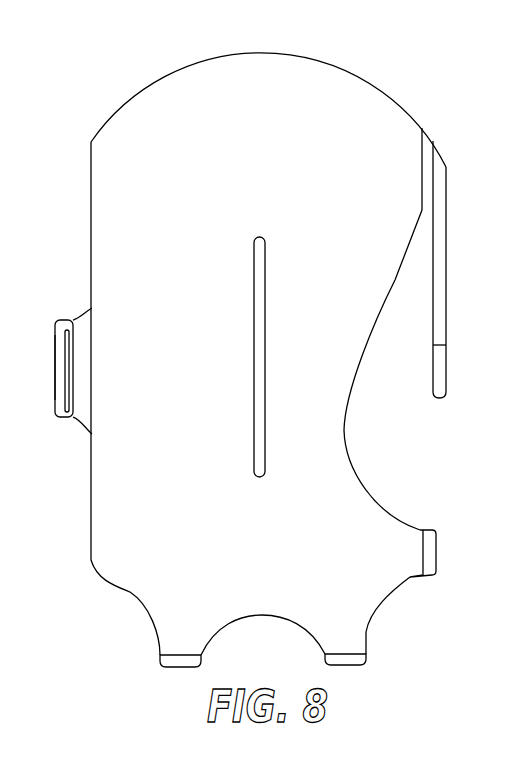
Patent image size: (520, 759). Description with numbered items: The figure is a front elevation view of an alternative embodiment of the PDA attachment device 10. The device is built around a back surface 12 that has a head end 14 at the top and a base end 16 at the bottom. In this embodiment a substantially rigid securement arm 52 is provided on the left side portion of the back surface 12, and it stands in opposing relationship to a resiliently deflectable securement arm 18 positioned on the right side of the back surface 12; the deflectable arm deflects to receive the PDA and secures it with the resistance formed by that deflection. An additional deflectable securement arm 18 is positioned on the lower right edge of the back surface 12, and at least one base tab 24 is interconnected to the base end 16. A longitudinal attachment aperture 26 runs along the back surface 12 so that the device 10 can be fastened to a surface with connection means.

The PDA attachment device 10 is at (408, 78).
The back surface 12 is at (90, 512).
The head end 14 is at (190, 63).
The base end 16 is at (383, 598).
The securement arm 18 is at (446, 258).
The base tab 24 is at (160, 657).
The attachment aperture 26 is at (254, 280).
The substantially rigid securement arm 52 is at (88, 312).